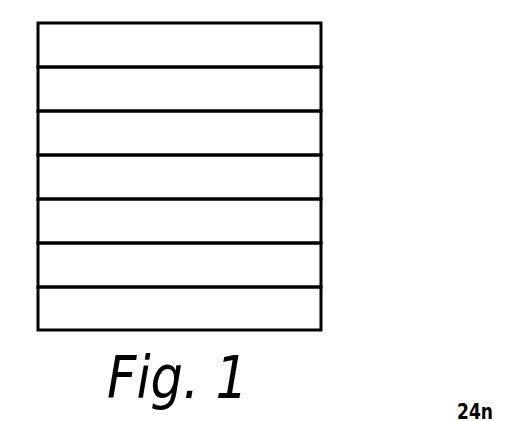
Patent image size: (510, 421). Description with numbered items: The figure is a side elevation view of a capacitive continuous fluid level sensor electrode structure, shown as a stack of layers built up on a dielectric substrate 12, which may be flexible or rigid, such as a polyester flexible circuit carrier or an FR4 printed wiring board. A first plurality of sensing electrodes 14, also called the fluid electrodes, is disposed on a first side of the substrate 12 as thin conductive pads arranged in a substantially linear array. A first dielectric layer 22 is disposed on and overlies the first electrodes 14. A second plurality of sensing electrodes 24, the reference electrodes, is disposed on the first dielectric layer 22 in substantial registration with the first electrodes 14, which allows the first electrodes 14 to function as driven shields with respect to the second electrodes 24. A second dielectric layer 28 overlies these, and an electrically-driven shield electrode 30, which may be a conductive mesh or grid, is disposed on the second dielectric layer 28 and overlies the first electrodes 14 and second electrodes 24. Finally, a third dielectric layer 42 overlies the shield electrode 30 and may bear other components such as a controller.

The dielectric substrate 12 is at (311, 310).
The first plurality of sensing electrodes 14 is at (308, 272).
The first dielectric layer 22 is at (306, 217).
The second plurality of sensing electrodes 24 is at (313, 168).
The second dielectric layer 28 is at (320, 127).
The shield electrode 30 is at (308, 81).
The third dielectric layer 42 is at (311, 43).